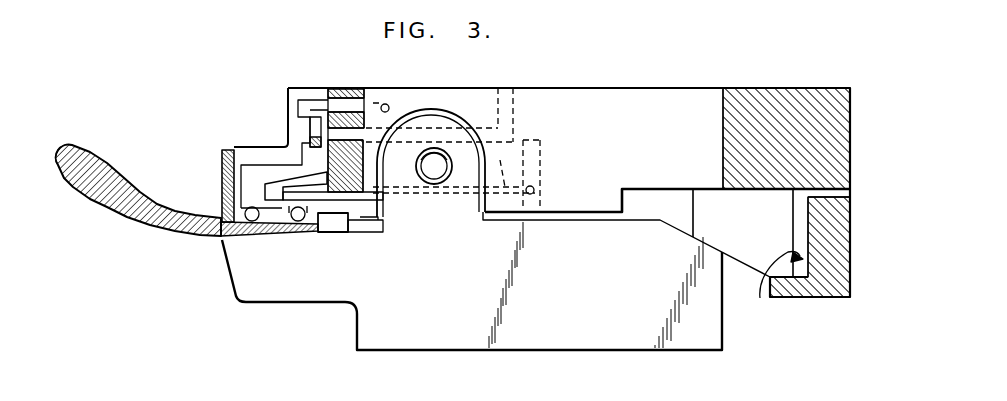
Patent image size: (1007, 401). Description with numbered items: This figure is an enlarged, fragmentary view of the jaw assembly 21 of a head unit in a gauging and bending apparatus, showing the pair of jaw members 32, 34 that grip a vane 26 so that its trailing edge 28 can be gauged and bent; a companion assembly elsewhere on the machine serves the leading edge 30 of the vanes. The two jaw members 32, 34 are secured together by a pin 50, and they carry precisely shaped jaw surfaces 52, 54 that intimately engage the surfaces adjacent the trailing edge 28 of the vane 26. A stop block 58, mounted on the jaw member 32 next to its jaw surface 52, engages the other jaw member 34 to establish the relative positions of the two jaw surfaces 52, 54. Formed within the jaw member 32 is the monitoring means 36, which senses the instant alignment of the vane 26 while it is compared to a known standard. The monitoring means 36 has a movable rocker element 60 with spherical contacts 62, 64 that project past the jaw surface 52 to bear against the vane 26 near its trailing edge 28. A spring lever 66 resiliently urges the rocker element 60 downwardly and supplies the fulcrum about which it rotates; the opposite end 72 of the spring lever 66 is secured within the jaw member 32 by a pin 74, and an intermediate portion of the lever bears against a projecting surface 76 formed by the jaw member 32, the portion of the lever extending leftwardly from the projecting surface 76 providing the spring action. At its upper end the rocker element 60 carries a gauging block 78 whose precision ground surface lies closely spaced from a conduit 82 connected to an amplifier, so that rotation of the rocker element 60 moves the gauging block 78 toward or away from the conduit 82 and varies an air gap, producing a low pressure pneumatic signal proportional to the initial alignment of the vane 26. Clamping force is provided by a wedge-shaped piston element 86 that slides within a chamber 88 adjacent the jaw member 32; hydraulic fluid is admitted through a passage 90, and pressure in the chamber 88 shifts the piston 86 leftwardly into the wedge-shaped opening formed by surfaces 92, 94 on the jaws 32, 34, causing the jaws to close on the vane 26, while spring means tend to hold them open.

The jaw assembly 21 is at (279, 340).
The vane 26 is at (100, 161).
The trailing edge 28 is at (272, 238).
The leading edge 30 is at (57, 150).
The jaw member 32 is at (587, 140).
The jaw member 34 is at (565, 328).
The monitoring means 36 is at (255, 100).
The pin 50 is at (422, 175).
The jaw surface 52 is at (210, 217).
The jaw surface 54 is at (222, 233).
The stop block 58 is at (343, 233).
The rocker element 60 is at (256, 162).
The spherical contact 62 is at (252, 224).
The spherical contact 64 is at (300, 228).
The spring lever 66 is at (300, 187).
The opposite end of spring lever 72 is at (453, 147).
The pin 74 is at (535, 190).
The projecting surface 76 is at (360, 172).
The gauging block 78 is at (310, 133).
The conduit 82 is at (345, 135).
The piston element 86 is at (736, 225).
The chamber 88 is at (772, 292).
The passage 90 is at (845, 195).
The surface 92 is at (668, 189).
The surface 94 is at (648, 217).